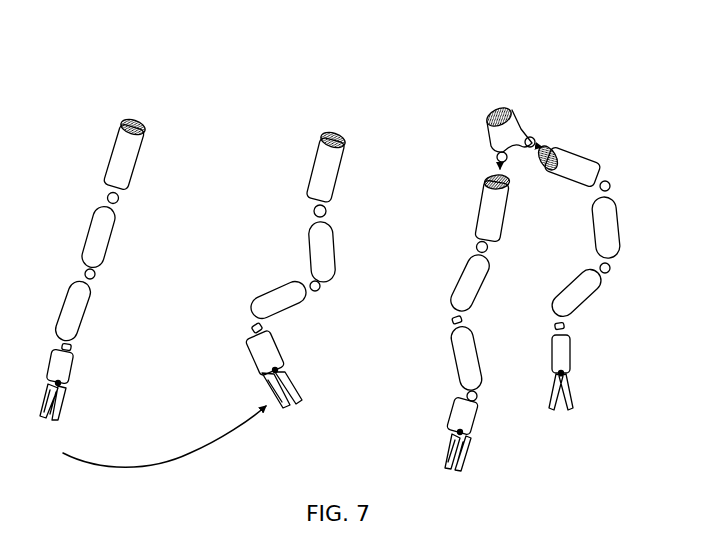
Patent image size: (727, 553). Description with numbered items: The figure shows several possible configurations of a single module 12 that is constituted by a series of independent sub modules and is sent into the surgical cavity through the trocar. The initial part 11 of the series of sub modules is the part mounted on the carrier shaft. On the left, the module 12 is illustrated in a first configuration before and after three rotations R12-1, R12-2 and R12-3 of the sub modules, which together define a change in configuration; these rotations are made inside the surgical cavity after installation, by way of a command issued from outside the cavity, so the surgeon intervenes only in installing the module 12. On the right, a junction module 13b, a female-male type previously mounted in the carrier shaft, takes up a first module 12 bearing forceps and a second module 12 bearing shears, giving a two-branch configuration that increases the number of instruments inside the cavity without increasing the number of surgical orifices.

The initial part 11 is at (233, 154).
The module 12 is at (60, 430).
The rotation R12-1 is at (341, 222).
The rotation R12-2 is at (308, 313).
The rotation R12-3 is at (243, 300).
The female-male junction module 13b is at (525, 123).